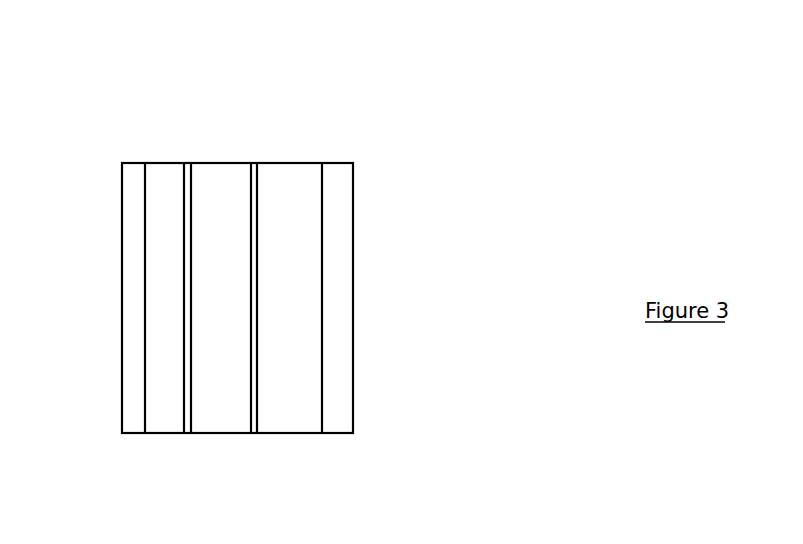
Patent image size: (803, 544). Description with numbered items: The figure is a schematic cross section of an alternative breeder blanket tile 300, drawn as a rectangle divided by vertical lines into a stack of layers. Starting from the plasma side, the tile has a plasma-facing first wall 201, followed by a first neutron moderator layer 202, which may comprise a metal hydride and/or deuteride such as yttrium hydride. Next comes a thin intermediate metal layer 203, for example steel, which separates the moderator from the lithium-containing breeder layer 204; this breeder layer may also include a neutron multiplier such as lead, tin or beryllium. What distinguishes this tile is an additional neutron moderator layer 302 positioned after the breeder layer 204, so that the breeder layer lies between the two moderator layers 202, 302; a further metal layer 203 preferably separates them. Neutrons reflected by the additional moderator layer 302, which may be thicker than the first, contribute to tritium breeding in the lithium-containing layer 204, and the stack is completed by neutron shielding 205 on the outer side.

The blanket tile 300 is at (97, 147).
The first wall 201 is at (130, 423).
The neutron moderator layer 202 is at (159, 422).
The intermediate metal layer 203 is at (252, 195).
The lithium-containing layer 204 is at (213, 202).
The additional neutron moderator layer 302 is at (285, 213).
The neutron shielding 205 is at (338, 297).